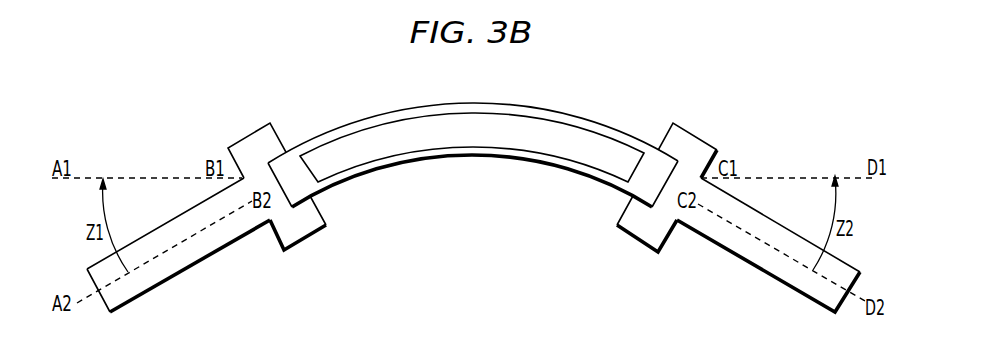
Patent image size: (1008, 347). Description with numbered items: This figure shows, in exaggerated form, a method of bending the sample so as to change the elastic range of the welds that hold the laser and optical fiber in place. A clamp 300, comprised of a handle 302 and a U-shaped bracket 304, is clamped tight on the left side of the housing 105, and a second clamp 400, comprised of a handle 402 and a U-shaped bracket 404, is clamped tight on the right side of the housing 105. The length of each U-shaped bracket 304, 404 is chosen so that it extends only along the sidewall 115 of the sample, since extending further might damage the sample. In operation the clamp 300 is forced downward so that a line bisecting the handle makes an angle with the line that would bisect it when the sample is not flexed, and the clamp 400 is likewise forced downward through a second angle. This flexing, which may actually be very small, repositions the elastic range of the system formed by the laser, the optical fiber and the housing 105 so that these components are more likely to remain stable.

The housing 105 is at (472, 108).
The sidewall 115 is at (300, 197).
The clamp 300 is at (206, 201).
The handle 302 is at (180, 264).
The U-shaped bracket 304 is at (273, 123).
The clamp 400 is at (738, 204).
The handle 402 is at (752, 253).
The U-shaped bracket 404 is at (715, 150).